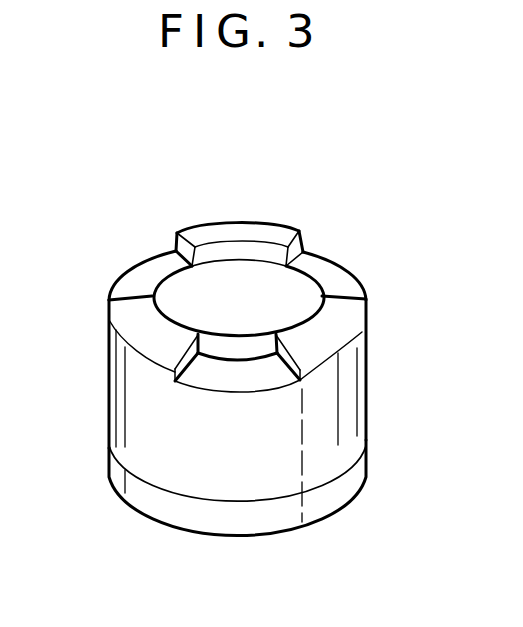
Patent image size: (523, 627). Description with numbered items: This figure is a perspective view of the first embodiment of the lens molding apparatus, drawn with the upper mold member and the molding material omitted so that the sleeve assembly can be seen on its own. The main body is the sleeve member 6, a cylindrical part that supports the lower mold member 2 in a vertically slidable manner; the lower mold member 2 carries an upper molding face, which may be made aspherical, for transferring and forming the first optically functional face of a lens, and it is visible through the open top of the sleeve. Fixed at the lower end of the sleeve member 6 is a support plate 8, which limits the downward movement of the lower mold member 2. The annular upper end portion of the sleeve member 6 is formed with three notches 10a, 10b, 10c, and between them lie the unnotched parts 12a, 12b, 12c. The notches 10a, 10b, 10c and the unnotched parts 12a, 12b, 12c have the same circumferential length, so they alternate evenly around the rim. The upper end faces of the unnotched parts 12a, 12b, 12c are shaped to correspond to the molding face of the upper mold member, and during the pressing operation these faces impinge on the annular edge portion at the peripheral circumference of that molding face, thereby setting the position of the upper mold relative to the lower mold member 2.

The lower mold member 2 is at (221, 283).
The sleeve member 6 is at (322, 437).
The support plate 8 is at (330, 495).
The notch 10a is at (156, 270).
The notch 10b is at (317, 274).
The notch 10c is at (208, 372).
The unnotched part 12a is at (270, 242).
The unnotched part 12b is at (322, 345).
The unnotched part 12c is at (143, 335).